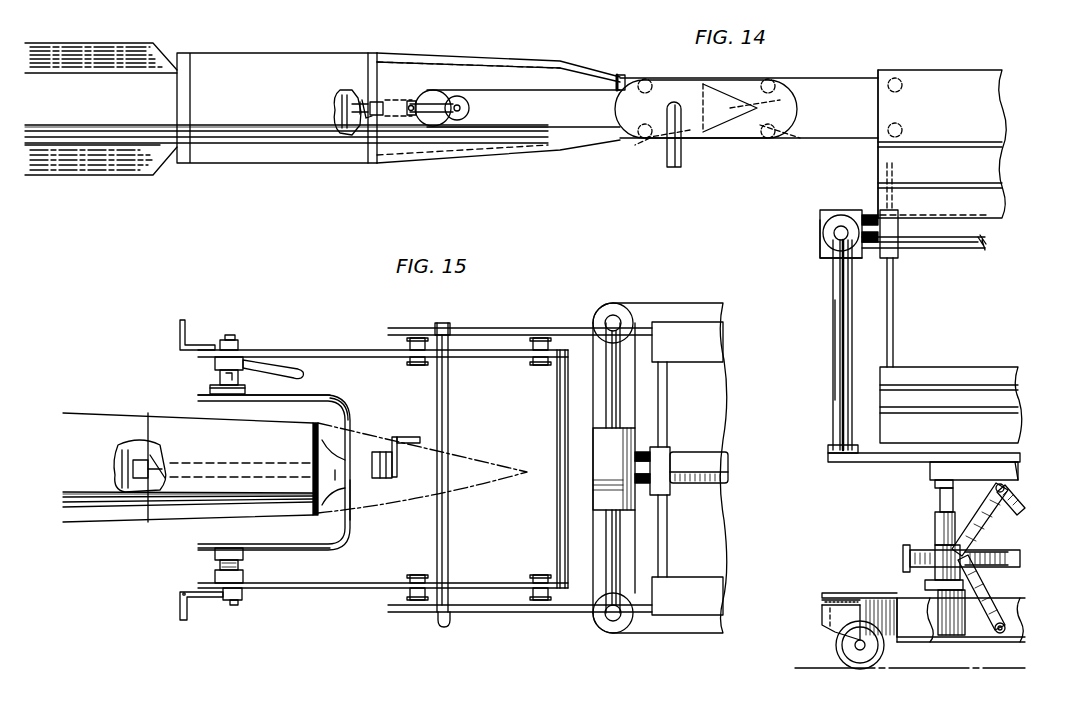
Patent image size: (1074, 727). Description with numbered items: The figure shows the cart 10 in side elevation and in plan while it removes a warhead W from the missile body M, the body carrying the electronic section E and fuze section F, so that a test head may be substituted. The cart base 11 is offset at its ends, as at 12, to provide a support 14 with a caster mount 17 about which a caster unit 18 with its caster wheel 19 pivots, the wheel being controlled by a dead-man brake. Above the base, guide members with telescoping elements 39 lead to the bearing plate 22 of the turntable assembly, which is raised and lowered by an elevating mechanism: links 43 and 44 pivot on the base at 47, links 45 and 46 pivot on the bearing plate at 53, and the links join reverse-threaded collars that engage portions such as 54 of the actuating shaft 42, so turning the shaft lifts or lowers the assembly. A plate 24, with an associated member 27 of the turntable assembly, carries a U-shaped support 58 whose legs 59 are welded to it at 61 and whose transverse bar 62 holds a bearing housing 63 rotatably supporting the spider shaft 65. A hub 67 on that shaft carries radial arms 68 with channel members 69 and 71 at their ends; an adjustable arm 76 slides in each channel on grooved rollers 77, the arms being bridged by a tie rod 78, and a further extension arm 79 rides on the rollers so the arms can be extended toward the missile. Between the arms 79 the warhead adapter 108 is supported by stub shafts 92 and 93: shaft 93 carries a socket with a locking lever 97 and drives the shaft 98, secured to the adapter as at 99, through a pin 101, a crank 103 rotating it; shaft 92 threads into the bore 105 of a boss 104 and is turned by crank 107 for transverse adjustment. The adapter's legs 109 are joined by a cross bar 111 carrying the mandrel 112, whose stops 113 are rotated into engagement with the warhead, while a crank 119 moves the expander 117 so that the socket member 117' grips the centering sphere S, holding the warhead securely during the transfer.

In FIG. 14, the frame 10 is at (996, 60).
In FIG. 15, the frame 10 is at (697, 296).
In FIG. 14, the base 11 is at (990, 642).
In FIG. 14, the offset 12 is at (900, 645).
In FIG. 14, the support 14 is at (830, 592).
In FIG. 14, the caster mount 17 is at (822, 606).
In FIG. 14, the caster unit 18 is at (822, 630).
In FIG. 14, the caster wheel 19 is at (850, 668).
In FIG. 14, the bearing plate 22 is at (935, 484).
In FIG. 14, the plate 24 is at (868, 458).
In FIG. 15, the plate 24 is at (644, 302).
In FIG. 14, the support plate 27 is at (930, 468).
In FIG. 14, the telescoping elements 39 is at (940, 545).
In FIG. 14, the actuating shaft 42 is at (1020, 558).
In FIG. 14, the link 43 is at (985, 602).
In FIG. 14, the link 44 is at (1020, 600).
In FIG. 14, the link 45 is at (1010, 515).
In FIG. 14, the link 46 is at (1012, 496).
In FIG. 14, the pivot connection 47 is at (1001, 634).
In FIG. 14, the pivot connection 53 is at (1015, 465).
In FIG. 14, the threaded portion 54 is at (978, 548).
In FIG. 14, the U-shaped support 58 is at (826, 311).
In FIG. 15, the U-shaped support 58 is at (604, 344).
In FIG. 14, the terminal legs 59 is at (833, 355).
In FIG. 14, the weld 61 is at (830, 448).
In FIG. 14, the transverse bar 62 is at (841, 226).
In FIG. 15, the transverse bar 62 is at (605, 392).
In FIG. 14, the bearing housing 63 is at (822, 222).
In FIG. 15, the bearing housing 63 is at (619, 473).
In FIG. 14, the shaft 65 is at (955, 250).
In FIG. 15, the shaft 65 is at (688, 452).
In FIG. 15, the hub 67 is at (670, 492).
In FIG. 14, the arms 68 is at (895, 315).
In FIG. 15, the arms 68 is at (668, 395).
In FIG. 14, the channel member 69 is at (990, 169).
In FIG. 14, the channel member 71 is at (932, 66).
In FIG. 15, the channel member 71 is at (710, 343).
In FIG. 14, the adjustable arm 76 is at (823, 77).
In FIG. 15, the adjustable arm 76 is at (480, 328).
In FIG. 14, the grooved rollers 77 is at (762, 80).
In FIG. 15, the grooved rollers 77 is at (533, 362).
In FIG. 14, the tie rod 78 is at (684, 162).
In FIG. 15, the tie rod 78 is at (438, 618).
In FIG. 14, the adjustable arm 79 is at (567, 88).
In FIG. 15, the adjustable arm 79 is at (326, 350).
In FIG. 14, the stub shaft 92 is at (460, 96).
In FIG. 15, the stub shaft 92 is at (235, 602).
In FIG. 15, the stub shaft 93 is at (229, 335).
In FIG. 15, the locking lever 97 is at (282, 369).
In FIG. 15, the shaft 98 is at (242, 385).
In FIG. 15, the securing point 99 is at (240, 400).
In FIG. 15, the pin 101 is at (234, 372).
In FIG. 15, the crank 103 is at (200, 306).
In FIG. 15, the boss 104 is at (243, 553).
In FIG. 15, the bore 105 is at (240, 568).
In FIG. 14, the crank 107 is at (428, 92).
In FIG. 15, the crank 107 is at (188, 615).
In FIG. 14, the warhead adapter 108 is at (478, 99).
In FIG. 15, the warhead adapter 108 is at (358, 410).
In FIG. 15, the legs 109 is at (198, 397).
In FIG. 15, the cross bar 111 is at (357, 512).
In FIG. 14, the mandrel 112 is at (378, 96).
In FIG. 15, the mandrel 112 is at (218, 462).
In FIG. 14, the stops 113 is at (371, 85).
In FIG. 15, the stops 113 is at (140, 447).
In FIG. 14, the expander 117 is at (349, 144).
In FIG. 15, the expander 117 is at (130, 506).
In FIG. 14, the socket member 117' is at (331, 107).
In FIG. 15, the socket member 117' is at (115, 468).
In FIG. 15, the crank 119 is at (396, 436).
In FIG. 14, the electronic section E is at (262, 52).
In FIG. 15, the electronic section E is at (68, 413).
In FIG. 14, the fuze section F is at (615, 75).
In FIG. 14, the missile body M is at (102, 110).
In FIG. 14, the centering sphere S is at (345, 88).
In FIG. 15, the centering sphere S is at (120, 445).
In FIG. 14, the warhead W is at (425, 52).
In FIG. 15, the warhead W is at (306, 396).